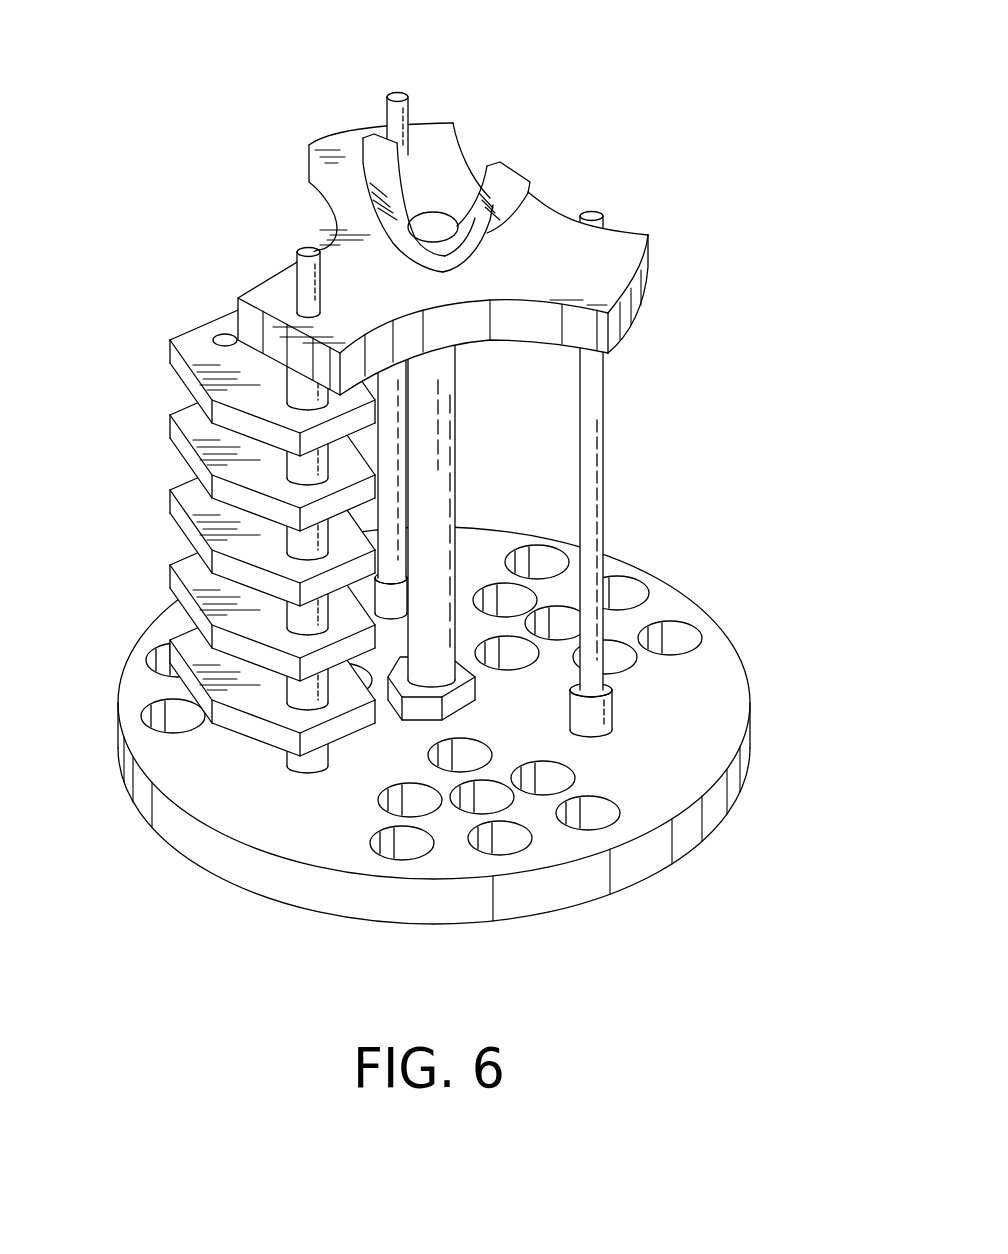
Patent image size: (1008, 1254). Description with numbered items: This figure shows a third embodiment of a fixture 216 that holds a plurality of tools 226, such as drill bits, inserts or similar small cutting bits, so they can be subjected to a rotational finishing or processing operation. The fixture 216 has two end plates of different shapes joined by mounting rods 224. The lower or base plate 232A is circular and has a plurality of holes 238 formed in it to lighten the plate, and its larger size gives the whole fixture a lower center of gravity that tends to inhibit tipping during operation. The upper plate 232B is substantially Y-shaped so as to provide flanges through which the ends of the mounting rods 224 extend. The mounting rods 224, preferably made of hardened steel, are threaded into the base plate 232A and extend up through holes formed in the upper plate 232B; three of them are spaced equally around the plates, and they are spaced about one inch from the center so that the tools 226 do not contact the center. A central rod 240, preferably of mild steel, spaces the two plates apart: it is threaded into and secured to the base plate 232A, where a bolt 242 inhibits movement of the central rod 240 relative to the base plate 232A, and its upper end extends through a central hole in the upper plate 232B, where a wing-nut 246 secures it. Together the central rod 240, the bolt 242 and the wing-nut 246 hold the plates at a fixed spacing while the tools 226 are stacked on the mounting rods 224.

The fixture 216 is at (467, 500).
The wing-nut 246 is at (305, 175).
The upper plate 232B is at (623, 267).
The mounting rods 224 is at (594, 404).
The central rod 240 is at (440, 467).
The tools 226 is at (183, 562).
The base plate 232A is at (688, 718).
The bolt 242 is at (425, 703).
The holes 238 is at (381, 843).